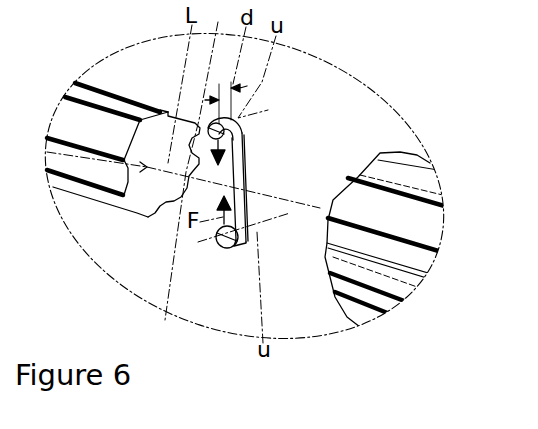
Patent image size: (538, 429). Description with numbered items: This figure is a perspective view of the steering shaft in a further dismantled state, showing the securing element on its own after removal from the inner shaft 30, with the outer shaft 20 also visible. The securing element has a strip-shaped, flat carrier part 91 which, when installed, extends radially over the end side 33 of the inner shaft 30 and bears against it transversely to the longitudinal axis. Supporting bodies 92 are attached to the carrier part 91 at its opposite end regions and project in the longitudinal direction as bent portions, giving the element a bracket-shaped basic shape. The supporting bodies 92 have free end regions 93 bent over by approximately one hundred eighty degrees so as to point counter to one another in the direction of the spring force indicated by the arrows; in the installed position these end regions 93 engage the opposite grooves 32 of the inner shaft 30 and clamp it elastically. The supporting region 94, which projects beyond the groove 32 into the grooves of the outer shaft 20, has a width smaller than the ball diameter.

The outer shaft 20 is at (403, 215).
The inner shaft 30 is at (77, 125).
The grooves 32 is at (131, 113).
The end side 33 is at (147, 167).
The carrier part 91 is at (240, 170).
The supporting bodies 92 is at (243, 140).
The free end regions 93 is at (241, 152).
The supporting region 94 is at (189, 170).